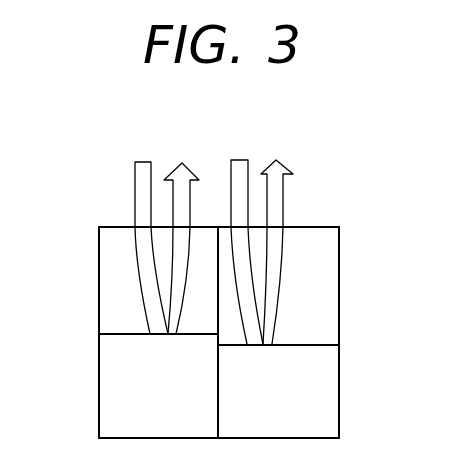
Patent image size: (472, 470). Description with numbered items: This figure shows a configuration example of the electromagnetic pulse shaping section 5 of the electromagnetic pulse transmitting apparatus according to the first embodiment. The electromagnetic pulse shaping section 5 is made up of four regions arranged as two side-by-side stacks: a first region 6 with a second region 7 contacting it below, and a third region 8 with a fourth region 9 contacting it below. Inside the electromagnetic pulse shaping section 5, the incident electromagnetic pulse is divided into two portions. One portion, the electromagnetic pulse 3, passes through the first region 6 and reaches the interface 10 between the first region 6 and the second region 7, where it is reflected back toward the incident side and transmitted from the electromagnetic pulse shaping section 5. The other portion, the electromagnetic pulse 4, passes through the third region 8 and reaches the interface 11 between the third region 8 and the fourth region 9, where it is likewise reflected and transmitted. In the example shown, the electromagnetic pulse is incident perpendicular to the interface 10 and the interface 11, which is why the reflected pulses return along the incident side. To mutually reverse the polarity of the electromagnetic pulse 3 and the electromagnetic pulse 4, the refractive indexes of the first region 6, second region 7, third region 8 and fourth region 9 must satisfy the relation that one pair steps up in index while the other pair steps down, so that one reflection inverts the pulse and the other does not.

The electromagnetic pulse 3 is at (143, 163).
The electromagnetic pulse 4 is at (240, 162).
The electromagnetic pulse shaping section 5 is at (44, 245).
The first region 6 is at (100, 266).
The second region 7 is at (100, 386).
The third region 8 is at (333, 277).
The fourth region 9 is at (333, 397).
The interface 10 is at (115, 334).
The interface 11 is at (322, 345).